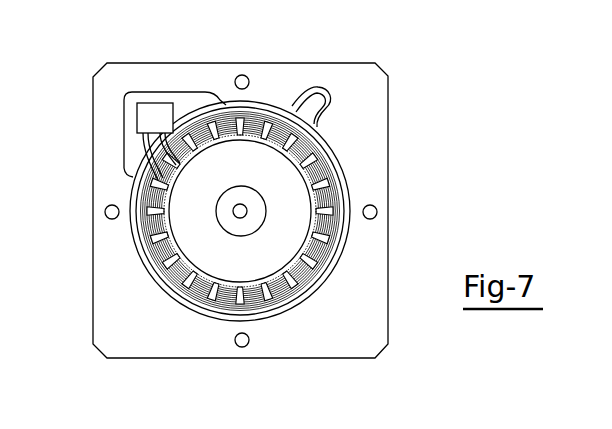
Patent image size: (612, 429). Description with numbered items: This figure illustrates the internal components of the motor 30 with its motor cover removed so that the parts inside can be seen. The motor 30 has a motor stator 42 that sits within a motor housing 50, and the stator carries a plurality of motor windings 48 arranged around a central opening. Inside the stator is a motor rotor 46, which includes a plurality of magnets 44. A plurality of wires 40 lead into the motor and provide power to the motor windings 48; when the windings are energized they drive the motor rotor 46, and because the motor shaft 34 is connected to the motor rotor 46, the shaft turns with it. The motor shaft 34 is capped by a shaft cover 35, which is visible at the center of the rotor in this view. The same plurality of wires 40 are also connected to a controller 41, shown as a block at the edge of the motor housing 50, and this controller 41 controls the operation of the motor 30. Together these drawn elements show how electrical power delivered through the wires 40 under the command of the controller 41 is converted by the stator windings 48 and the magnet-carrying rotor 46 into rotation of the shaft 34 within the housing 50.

The motor 30 is at (126, 42).
The motor shaft 34 is at (261, 172).
The shaft cover 35 is at (244, 214).
The wires 40 is at (189, 110).
The controller 41 is at (143, 113).
The motor stator 42 is at (340, 284).
The magnets 44 is at (184, 165).
The motor rotor 46 is at (190, 247).
The motor windings 48 is at (302, 281).
The motor housing 50 is at (165, 337).